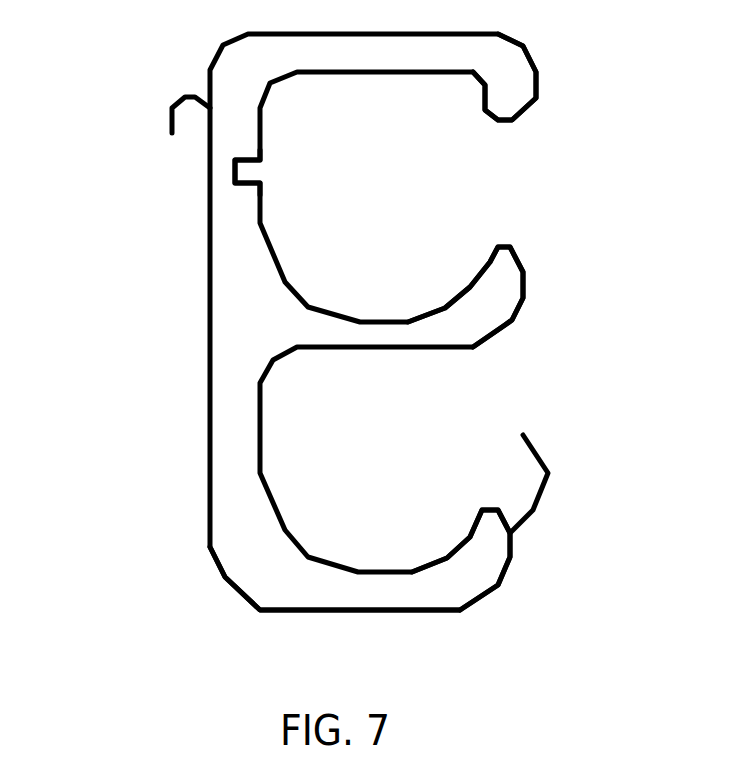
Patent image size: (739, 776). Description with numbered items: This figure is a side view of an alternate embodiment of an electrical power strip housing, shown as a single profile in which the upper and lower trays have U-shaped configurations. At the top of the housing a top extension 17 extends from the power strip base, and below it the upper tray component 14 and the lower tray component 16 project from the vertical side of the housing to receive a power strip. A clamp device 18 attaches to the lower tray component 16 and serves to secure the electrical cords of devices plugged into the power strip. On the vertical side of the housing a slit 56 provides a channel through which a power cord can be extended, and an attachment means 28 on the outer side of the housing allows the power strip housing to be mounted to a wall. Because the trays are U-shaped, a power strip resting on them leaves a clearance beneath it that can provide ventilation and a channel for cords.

The upper tray component 14 is at (535, 296).
The lower tray component 16 is at (437, 610).
The top extension 17 is at (536, 84).
The clamp device 18 is at (548, 547).
The attachment means 28 is at (172, 122).
The slits 56 is at (235, 210).